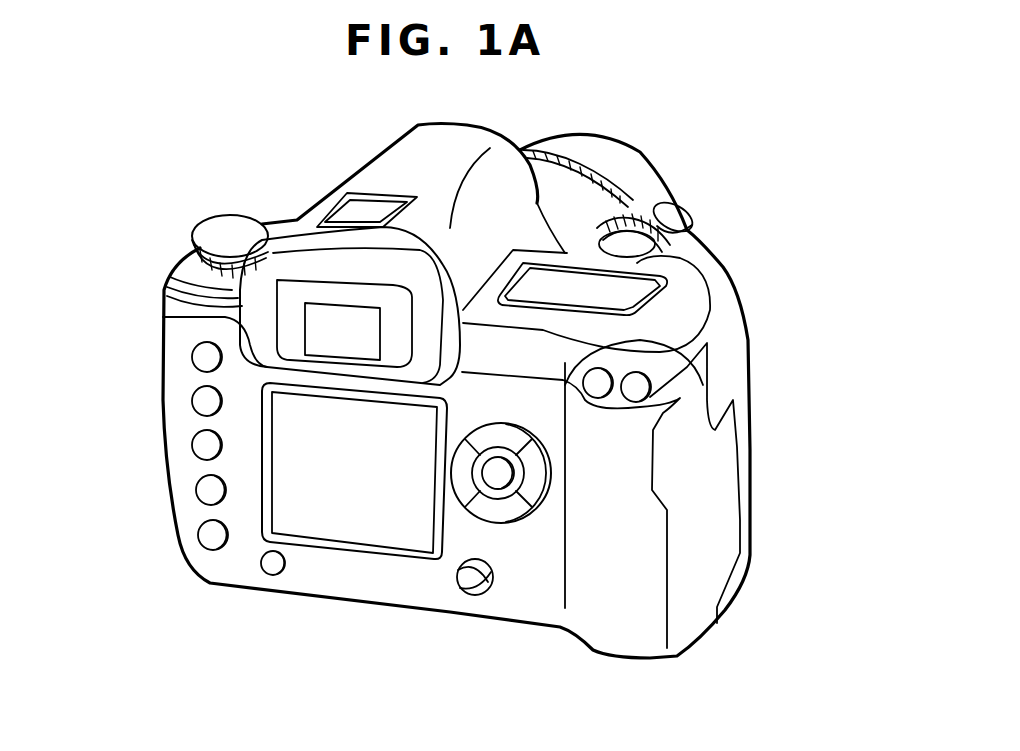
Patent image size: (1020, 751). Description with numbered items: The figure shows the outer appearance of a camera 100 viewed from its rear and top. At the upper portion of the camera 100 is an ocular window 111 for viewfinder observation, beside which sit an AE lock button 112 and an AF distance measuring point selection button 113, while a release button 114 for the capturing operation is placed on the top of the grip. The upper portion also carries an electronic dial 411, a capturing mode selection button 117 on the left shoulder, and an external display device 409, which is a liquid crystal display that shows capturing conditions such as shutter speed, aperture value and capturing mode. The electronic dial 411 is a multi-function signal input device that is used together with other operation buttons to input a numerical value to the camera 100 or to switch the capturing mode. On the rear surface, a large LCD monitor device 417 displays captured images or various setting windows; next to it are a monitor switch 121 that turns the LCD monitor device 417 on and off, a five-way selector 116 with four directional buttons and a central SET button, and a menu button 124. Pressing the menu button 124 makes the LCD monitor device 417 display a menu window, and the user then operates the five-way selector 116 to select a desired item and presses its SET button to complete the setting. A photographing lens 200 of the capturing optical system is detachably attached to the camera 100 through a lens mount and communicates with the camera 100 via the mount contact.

The camera 100 is at (160, 280).
The capturing mode selection button 117 is at (217, 233).
The ocular window 111 is at (342, 313).
The photographing lens 200 is at (578, 132).
The electronic dial 411 is at (645, 222).
The release button 114 is at (677, 214).
The external display device 409 is at (615, 287).
The AE lock button 112 is at (597, 383).
The AF distance measuring point selection button 113 is at (640, 393).
The menu button 124 is at (205, 360).
The monitor switch 121 is at (210, 540).
The LCD monitor device 417 is at (340, 518).
The 5-way selector 116 is at (500, 517).